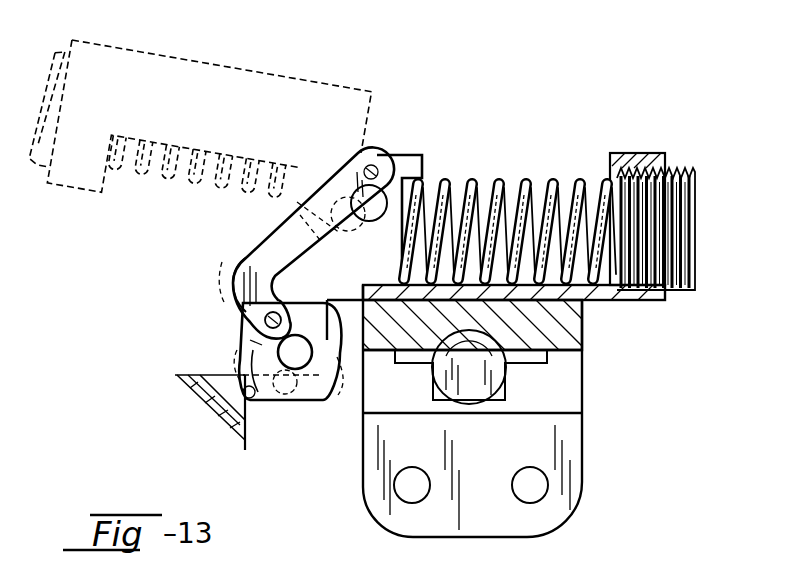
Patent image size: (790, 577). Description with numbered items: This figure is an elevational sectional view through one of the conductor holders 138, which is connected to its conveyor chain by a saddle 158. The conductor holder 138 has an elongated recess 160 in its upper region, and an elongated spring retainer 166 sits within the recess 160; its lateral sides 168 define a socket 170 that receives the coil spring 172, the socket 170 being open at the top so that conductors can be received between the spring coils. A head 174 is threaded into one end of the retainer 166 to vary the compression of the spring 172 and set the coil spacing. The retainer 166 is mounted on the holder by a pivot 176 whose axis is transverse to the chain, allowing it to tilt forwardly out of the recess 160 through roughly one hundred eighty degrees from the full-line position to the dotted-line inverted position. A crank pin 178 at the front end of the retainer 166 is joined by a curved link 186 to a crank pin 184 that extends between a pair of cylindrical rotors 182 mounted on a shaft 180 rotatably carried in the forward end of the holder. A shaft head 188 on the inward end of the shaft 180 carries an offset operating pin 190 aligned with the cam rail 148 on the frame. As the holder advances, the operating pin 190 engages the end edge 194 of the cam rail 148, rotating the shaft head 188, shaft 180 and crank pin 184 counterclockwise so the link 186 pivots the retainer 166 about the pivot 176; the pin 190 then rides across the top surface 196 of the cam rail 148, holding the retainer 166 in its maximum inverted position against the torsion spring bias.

The conductor holder 138 is at (590, 341).
The cam rail 148 is at (200, 400).
The saddle 158 is at (573, 477).
The recess 160 is at (582, 328).
The spring retainer 166 is at (297, 72).
The lateral sides 168 is at (497, 190).
The socket 170 is at (422, 182).
The coil spring 172 is at (212, 193).
The head 174 is at (687, 174).
The pivot 176 is at (369, 223).
The crank pin 178 is at (362, 155).
The shaft 180 is at (333, 390).
The cylindrical rotors 182 is at (253, 350).
The crank pin 184 is at (258, 314).
The curved link 186 is at (240, 256).
The shaft head 188 is at (263, 403).
The operating pin 190 is at (235, 400).
The end edge 194 is at (247, 427).
The top surface 196 is at (197, 368).